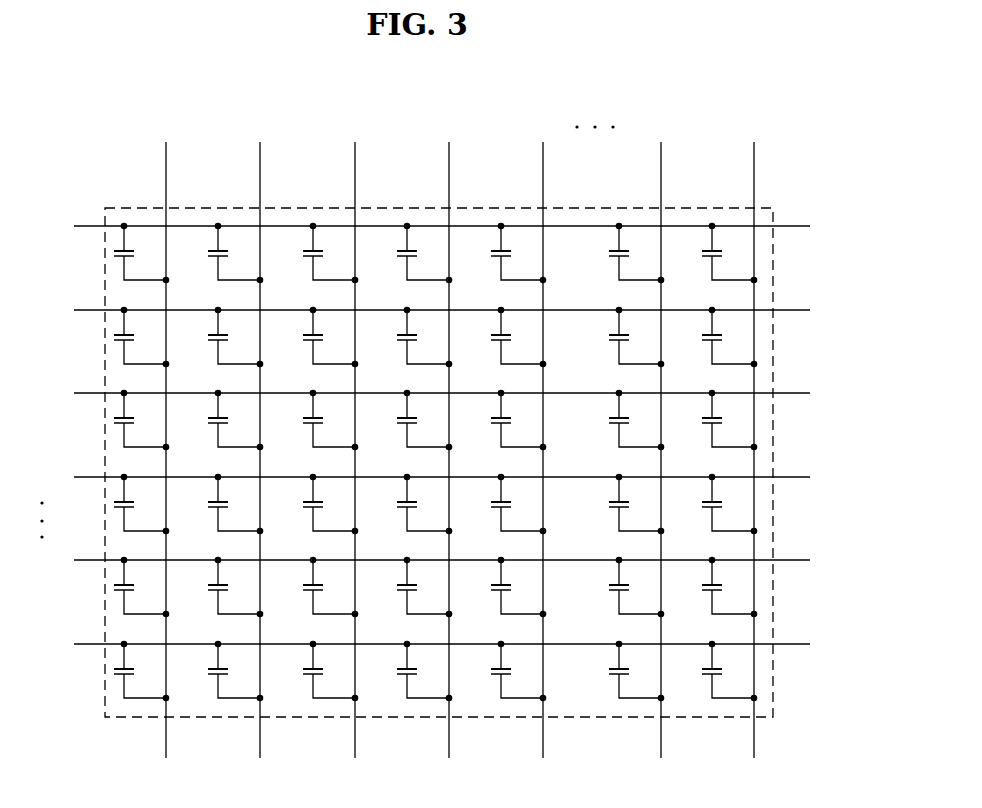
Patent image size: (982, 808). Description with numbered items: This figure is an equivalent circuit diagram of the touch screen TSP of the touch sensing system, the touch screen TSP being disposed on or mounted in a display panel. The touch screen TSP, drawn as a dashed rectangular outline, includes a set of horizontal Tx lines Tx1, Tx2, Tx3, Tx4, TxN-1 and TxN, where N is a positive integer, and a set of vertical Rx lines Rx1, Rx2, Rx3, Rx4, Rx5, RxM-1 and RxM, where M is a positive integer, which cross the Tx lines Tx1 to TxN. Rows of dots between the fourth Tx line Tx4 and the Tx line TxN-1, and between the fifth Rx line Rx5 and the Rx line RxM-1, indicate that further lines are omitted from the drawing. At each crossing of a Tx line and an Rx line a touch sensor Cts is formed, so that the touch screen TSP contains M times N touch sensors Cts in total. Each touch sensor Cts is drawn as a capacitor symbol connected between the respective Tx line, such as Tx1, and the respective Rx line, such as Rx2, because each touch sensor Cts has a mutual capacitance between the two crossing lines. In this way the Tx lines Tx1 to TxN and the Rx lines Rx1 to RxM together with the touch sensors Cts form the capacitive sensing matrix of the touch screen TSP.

The touch sensor Cts is at (217, 253).
The touch screen TSP is at (774, 508).
The Rx line Rx1 is at (166, 438).
The Rx line Rx2 is at (260, 438).
The Rx line Rx3 is at (355, 438).
The Rx line Rx4 is at (449, 438).
The Rx line Rx5 is at (543, 438).
The Rx line RxM-1 is at (661, 438).
The Rx line RxM is at (754, 438).
The Tx line Tx1 is at (422, 228).
The Tx line Tx2 is at (422, 312).
The Tx line Tx3 is at (422, 395).
The Tx line Tx4 is at (422, 479).
The Tx line TxN-1 is at (412, 562).
The Tx line TxN is at (421, 646).